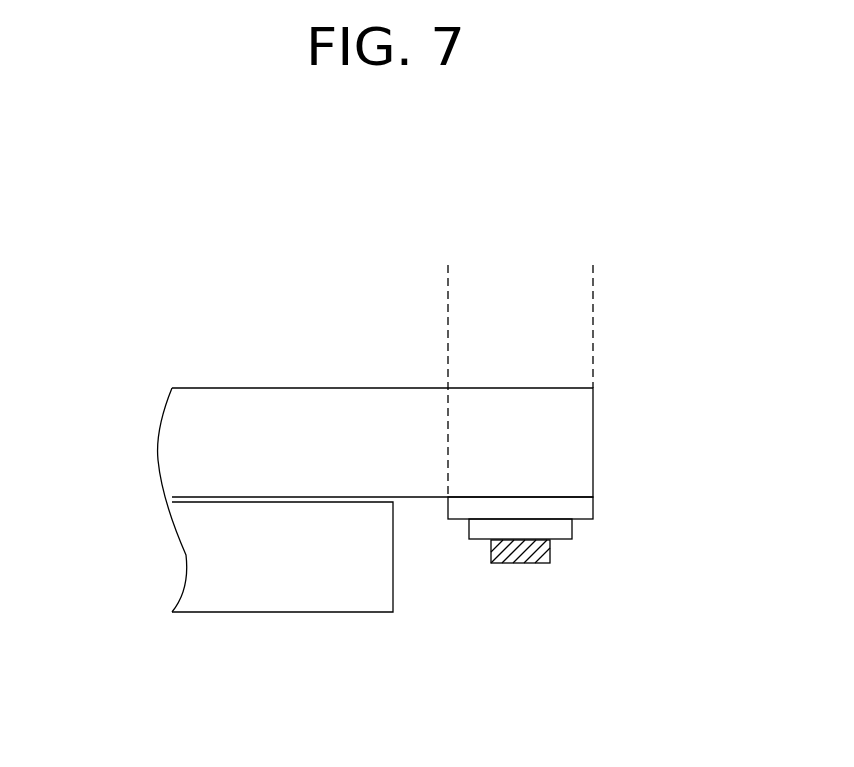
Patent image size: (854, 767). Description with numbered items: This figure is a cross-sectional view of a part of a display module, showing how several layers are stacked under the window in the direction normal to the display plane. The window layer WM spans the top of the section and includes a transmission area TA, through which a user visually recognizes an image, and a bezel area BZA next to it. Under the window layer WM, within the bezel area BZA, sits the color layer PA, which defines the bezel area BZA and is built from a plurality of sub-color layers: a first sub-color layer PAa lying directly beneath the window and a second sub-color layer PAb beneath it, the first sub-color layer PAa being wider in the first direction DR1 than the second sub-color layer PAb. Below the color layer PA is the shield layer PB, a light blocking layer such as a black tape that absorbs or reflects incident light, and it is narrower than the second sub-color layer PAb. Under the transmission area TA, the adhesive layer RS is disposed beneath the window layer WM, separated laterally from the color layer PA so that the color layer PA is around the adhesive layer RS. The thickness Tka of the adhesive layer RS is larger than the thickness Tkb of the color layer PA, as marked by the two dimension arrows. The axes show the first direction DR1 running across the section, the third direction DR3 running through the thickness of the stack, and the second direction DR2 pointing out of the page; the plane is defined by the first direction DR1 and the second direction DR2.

The transmission area TA is at (448, 284).
The bezel area BZA is at (593, 284).
The window layer WM is at (584, 443).
The adhesive layer RS is at (322, 595).
The thickness of the adhesive layer Tka is at (245, 502).
The thickness of the color layer Tkb is at (504, 497).
The color layer PA is at (593, 528).
The first sub-color layer PAa is at (583, 508).
The second sub-color layer PAb is at (561, 529).
The shield layer PB is at (529, 553).
The first direction DR1 is at (78, 727).
The second direction DR2 is at (86, 718).
The third direction DR3 is at (78, 727).